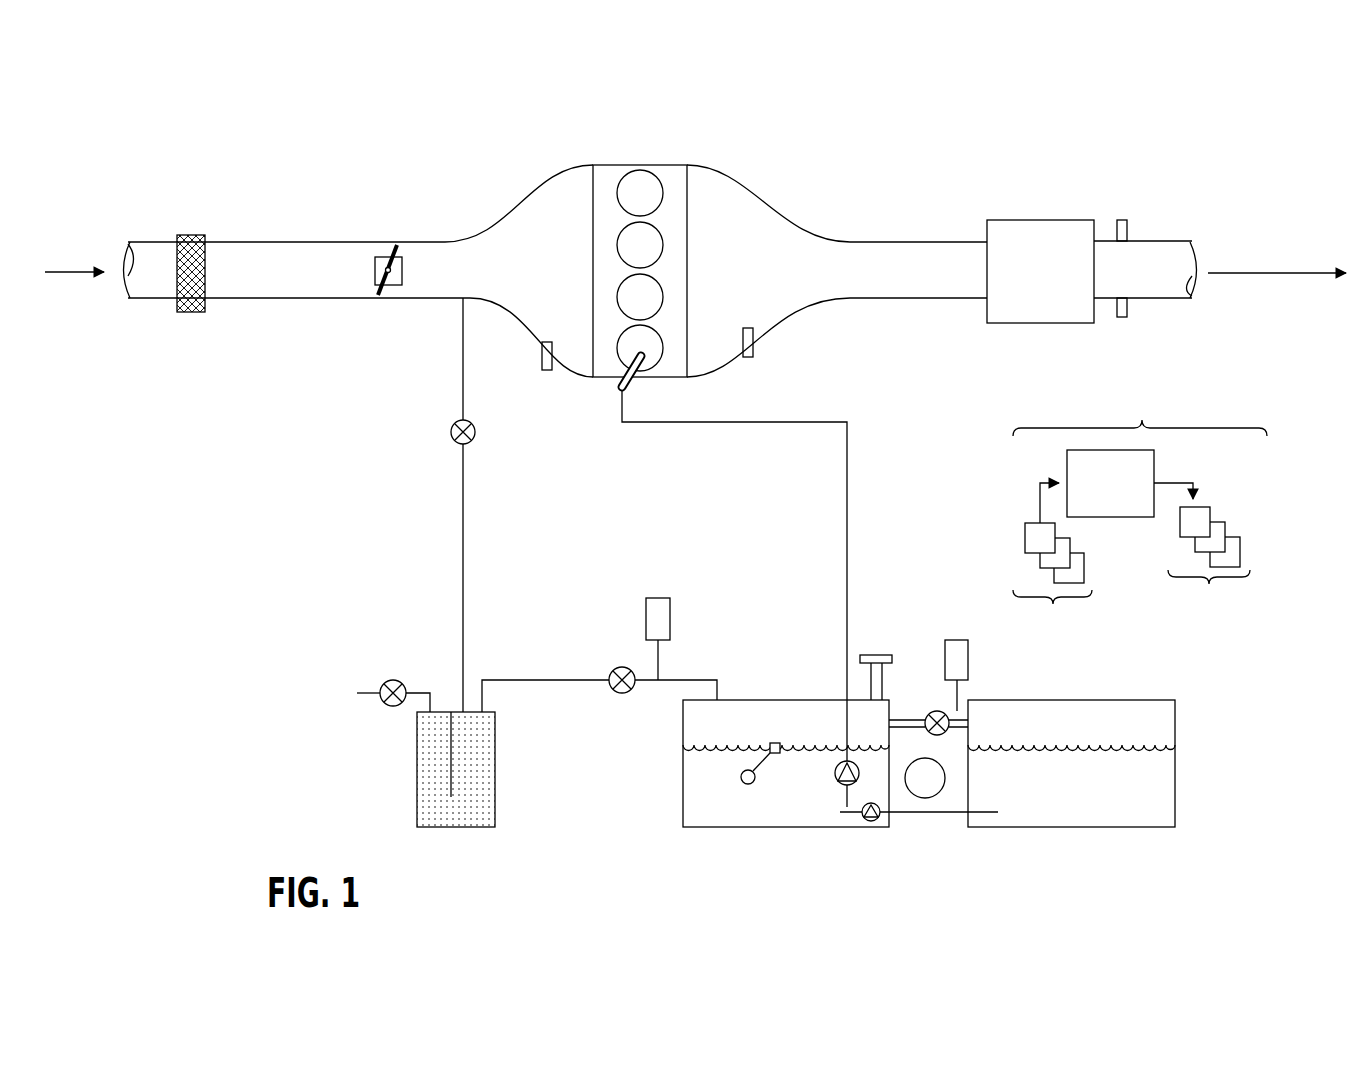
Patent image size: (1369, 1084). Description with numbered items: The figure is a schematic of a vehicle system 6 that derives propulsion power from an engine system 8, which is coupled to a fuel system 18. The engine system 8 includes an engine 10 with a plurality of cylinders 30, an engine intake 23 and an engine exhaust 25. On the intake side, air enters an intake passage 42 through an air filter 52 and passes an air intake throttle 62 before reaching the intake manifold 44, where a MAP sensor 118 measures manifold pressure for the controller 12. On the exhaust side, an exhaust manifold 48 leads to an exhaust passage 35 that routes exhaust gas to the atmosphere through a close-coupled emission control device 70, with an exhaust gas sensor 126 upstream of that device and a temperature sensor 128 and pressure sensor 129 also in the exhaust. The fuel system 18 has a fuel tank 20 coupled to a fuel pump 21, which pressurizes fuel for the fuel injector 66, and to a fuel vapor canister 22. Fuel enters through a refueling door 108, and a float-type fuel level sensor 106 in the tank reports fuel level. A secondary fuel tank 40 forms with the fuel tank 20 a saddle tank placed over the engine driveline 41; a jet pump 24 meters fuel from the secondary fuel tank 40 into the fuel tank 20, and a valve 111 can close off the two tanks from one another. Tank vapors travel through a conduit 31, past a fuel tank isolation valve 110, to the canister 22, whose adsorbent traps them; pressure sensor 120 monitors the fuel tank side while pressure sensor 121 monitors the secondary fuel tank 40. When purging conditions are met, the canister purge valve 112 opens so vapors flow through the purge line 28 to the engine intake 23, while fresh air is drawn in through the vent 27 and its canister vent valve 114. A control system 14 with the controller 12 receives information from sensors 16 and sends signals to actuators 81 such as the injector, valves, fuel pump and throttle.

The vehicle system 6 is at (142, 139).
The engine system 8 is at (1229, 134).
The engine 10 is at (688, 253).
The controller 12 is at (1116, 486).
The control system 14 is at (1140, 406).
The sensors 16 is at (1052, 583).
The fuel system 18 is at (936, 851).
The fuel tank 20 is at (745, 700).
The fuel pump 21 is at (835, 775).
The fuel vapor canister 22 is at (483, 827).
The engine intake 23 is at (519, 190).
The jet pump 24 is at (862, 818).
The engine exhaust 25 is at (803, 198).
The vent 27 is at (360, 693).
The purge line 28 is at (465, 506).
The cylinders 30 is at (659, 184).
The conduit 31 is at (672, 679).
The exhaust passage 35 is at (1175, 240).
The secondary fuel tank 40 is at (1030, 700).
The engine driveline 41 is at (913, 788).
The intake passage 42 is at (156, 300).
The intake manifold 44 is at (557, 283).
The exhaust manifold 48 is at (769, 283).
The air filter 52 is at (190, 235).
The air intake throttle 62 is at (398, 283).
The fuel injector 66 is at (634, 388).
The emission control device 70 is at (1025, 220).
The actuators 81 is at (1209, 565).
The fuel level sensor 106 is at (777, 743).
The refueling door 108 is at (882, 655).
The fuel tank isolation valve 110 is at (617, 669).
The valve 111 is at (932, 711).
The canister purge valve 112 is at (473, 427).
The canister vent valve 114 is at (393, 680).
The MAP sensor 118 is at (542, 356).
The pressure sensor 120 is at (670, 601).
The pressure sensor 121 is at (966, 640).
The exhaust gas sensor 126 is at (753, 340).
The temperature sensor 128 is at (1122, 317).
The pressure sensor 129 is at (1122, 220).